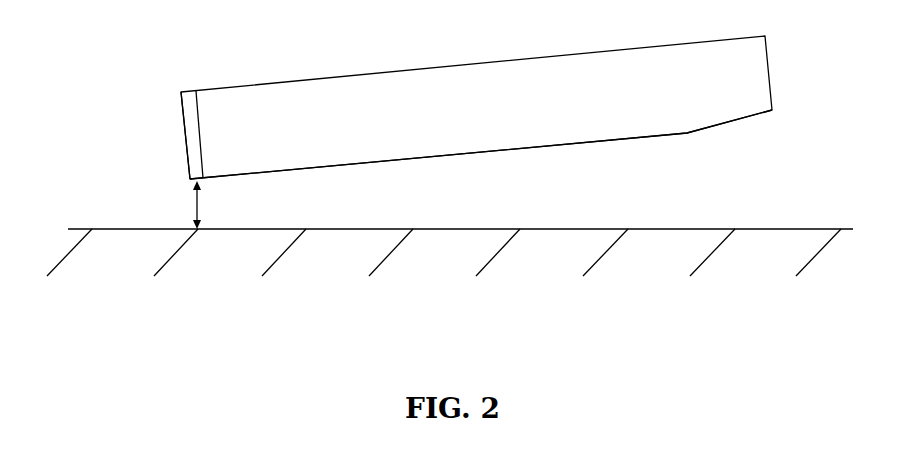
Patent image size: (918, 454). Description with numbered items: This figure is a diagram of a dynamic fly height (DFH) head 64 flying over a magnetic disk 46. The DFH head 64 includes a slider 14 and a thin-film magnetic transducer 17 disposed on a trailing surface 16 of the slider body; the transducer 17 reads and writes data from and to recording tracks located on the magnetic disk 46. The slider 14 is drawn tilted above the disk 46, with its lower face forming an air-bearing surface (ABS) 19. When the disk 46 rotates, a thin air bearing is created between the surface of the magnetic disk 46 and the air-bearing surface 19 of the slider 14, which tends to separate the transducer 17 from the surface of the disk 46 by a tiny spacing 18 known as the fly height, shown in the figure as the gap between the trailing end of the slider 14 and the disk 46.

The slider 14 is at (703, 38).
The trailing surface 16 is at (202, 135).
The thin-film magnetic transducer 17 is at (186, 135).
The spacing 18 is at (200, 210).
The air-bearing surface 19 is at (587, 145).
The magnetic disk 46 is at (762, 228).
The DFH head 64 is at (382, 48).